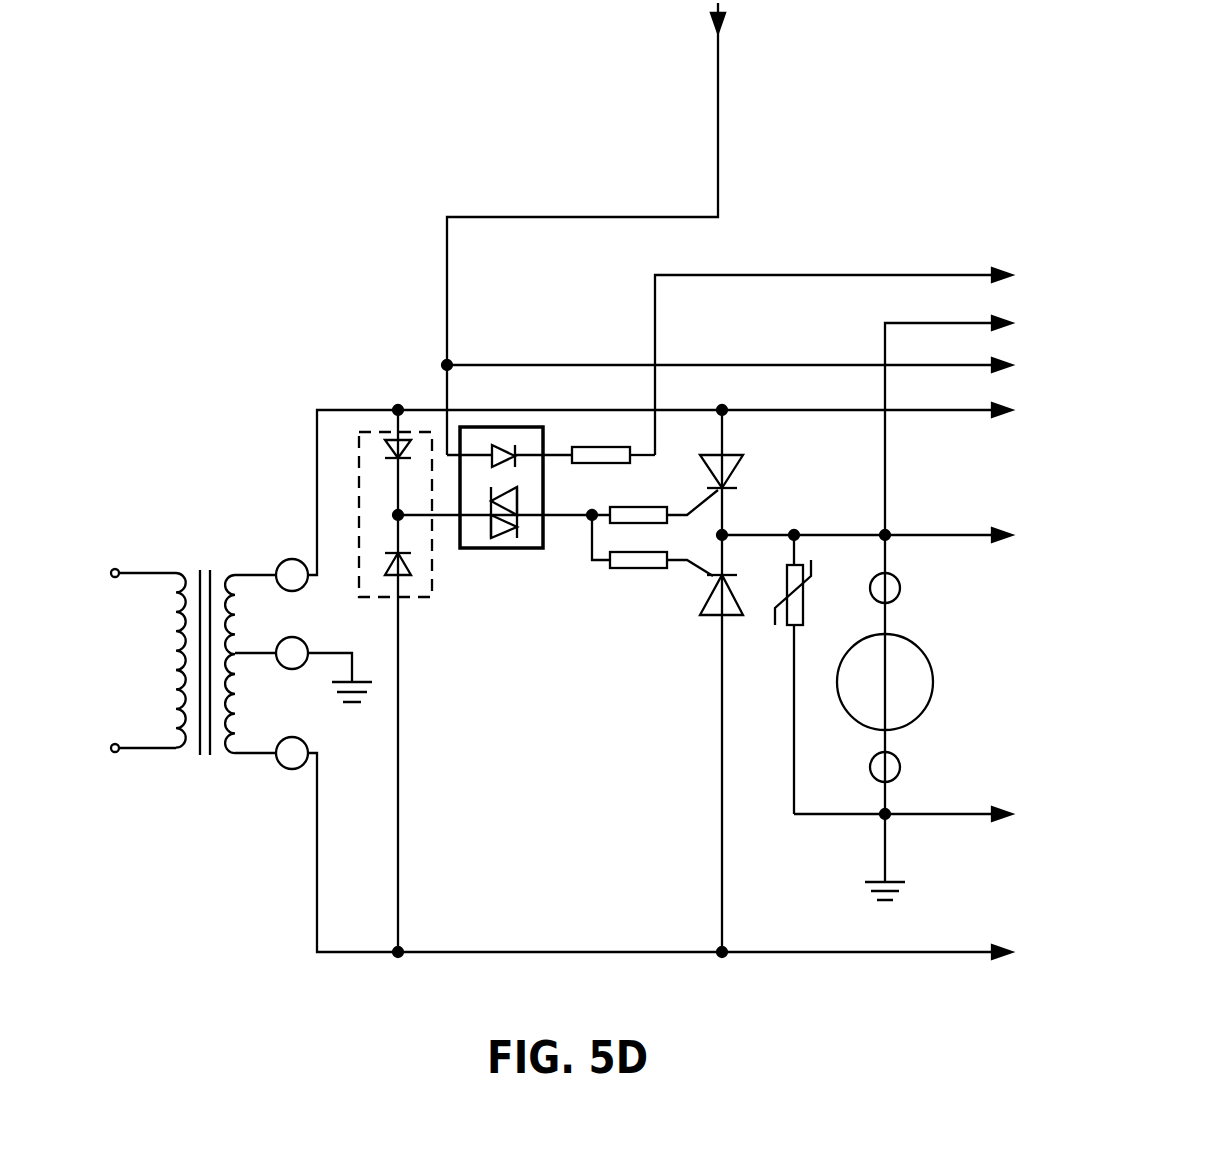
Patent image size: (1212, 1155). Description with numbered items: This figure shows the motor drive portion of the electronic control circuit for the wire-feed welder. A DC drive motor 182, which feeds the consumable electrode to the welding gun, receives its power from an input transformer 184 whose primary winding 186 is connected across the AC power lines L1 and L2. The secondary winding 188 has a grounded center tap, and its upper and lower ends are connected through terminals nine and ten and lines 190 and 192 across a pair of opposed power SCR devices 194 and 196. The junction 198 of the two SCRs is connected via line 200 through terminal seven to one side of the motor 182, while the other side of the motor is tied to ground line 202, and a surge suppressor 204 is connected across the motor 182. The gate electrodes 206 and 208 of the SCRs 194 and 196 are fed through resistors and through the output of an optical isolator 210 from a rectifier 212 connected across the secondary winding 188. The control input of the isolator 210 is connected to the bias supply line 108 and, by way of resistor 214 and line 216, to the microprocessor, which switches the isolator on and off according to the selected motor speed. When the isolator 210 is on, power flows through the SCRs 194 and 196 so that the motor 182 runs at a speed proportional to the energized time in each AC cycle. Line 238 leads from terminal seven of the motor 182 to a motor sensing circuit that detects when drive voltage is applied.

The bias supply line 108 is at (718, 70).
The line 216 is at (818, 274).
The line 238 is at (884, 345).
The line 190 is at (333, 410).
The line 192 is at (607, 948).
The input transformer 184 is at (205, 757).
The primary winding 186 is at (176, 675).
The secondary winding 188 is at (236, 712).
The rectifier 212 is at (410, 598).
The optical isolator 210 is at (495, 548).
The resistor 214 is at (622, 447).
The gate electrode 206 is at (701, 504).
The gate electrode 208 is at (700, 566).
The power SCR device 194 is at (743, 470).
The power SCR device 196 is at (706, 613).
The junction 198 is at (730, 530).
The line 200 is at (815, 533).
The surge suppressor 204 is at (803, 603).
The DC drive motor 182 is at (933, 682).
The ground line 202 is at (925, 817).